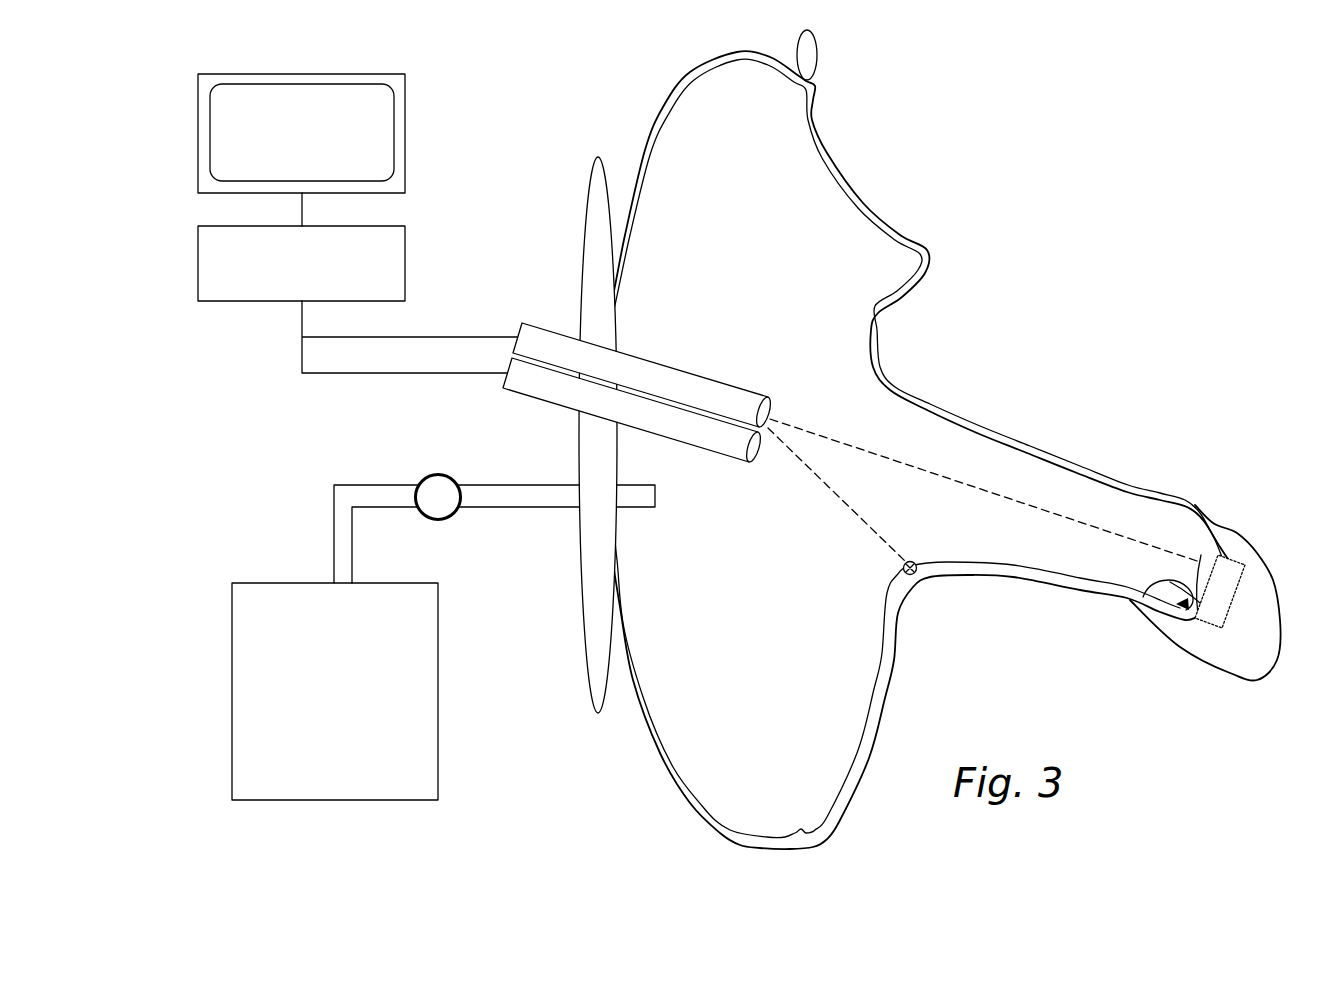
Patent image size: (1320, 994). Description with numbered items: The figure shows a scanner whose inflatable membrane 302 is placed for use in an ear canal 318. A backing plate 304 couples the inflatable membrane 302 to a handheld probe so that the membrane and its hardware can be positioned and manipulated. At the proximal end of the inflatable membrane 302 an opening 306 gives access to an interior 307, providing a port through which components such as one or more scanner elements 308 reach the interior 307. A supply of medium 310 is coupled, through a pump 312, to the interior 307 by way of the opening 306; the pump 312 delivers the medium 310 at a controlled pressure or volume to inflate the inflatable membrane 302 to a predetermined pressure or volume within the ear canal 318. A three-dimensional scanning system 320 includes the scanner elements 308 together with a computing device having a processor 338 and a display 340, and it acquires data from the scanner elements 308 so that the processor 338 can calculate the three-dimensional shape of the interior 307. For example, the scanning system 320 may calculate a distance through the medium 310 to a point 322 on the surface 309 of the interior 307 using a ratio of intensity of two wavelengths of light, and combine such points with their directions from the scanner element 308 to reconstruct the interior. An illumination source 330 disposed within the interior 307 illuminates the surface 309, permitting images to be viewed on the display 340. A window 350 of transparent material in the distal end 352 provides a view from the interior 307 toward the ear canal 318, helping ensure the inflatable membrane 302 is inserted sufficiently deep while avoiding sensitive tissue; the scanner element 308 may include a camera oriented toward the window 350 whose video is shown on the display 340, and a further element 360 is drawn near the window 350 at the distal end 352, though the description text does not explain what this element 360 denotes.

The inflatable membrane 302 is at (665, 106).
The backing plate 304 is at (582, 217).
The opening 306 is at (655, 302).
The interior 307 is at (752, 750).
The scanner element 308 is at (717, 377).
The surface 309 is at (877, 632).
The supply of medium 310 is at (258, 583).
The pump 312 is at (428, 473).
The ear canal 318 is at (1243, 652).
The three-dimensional scanning system 320 is at (290, 412).
The point 322 is at (903, 568).
The illumination source 330 is at (713, 450).
The processor 338 is at (405, 261).
The display 340 is at (407, 131).
The window 350 is at (1247, 558).
The distal end 352 is at (1186, 507).
The catheter tip 360 is at (1160, 585).